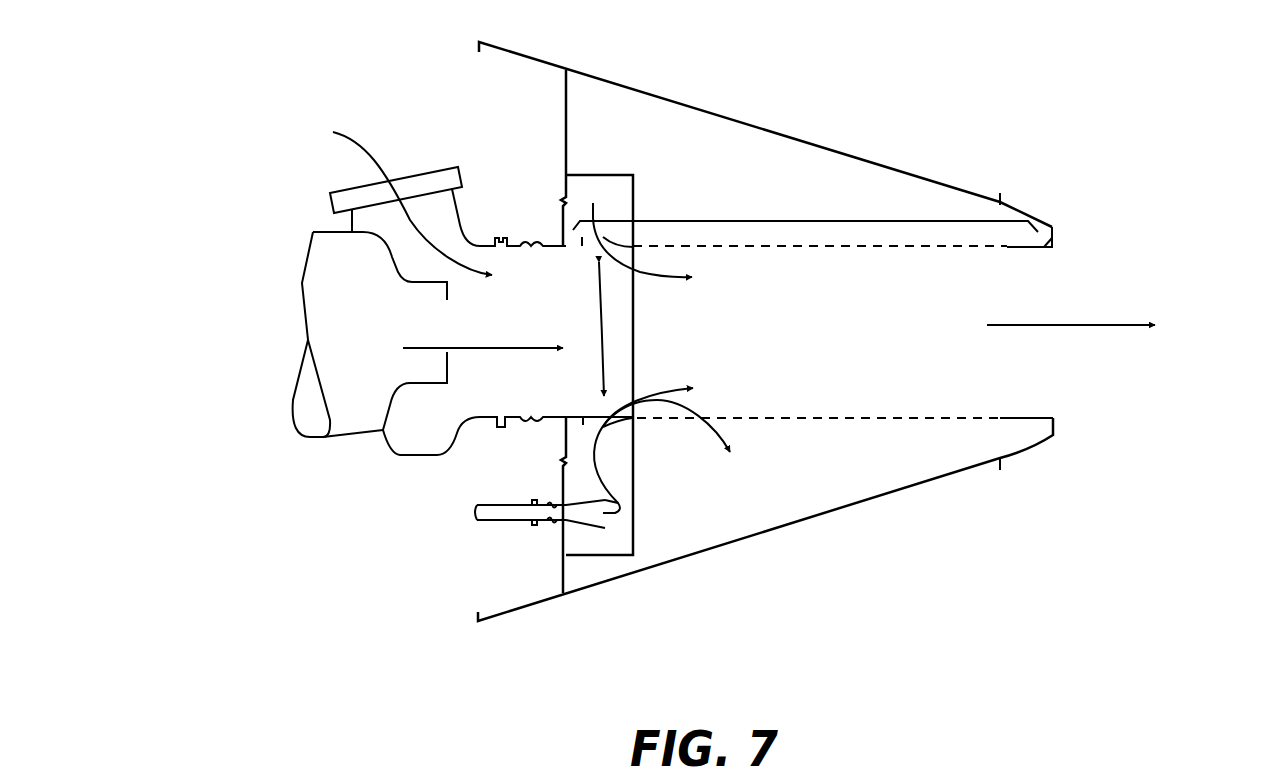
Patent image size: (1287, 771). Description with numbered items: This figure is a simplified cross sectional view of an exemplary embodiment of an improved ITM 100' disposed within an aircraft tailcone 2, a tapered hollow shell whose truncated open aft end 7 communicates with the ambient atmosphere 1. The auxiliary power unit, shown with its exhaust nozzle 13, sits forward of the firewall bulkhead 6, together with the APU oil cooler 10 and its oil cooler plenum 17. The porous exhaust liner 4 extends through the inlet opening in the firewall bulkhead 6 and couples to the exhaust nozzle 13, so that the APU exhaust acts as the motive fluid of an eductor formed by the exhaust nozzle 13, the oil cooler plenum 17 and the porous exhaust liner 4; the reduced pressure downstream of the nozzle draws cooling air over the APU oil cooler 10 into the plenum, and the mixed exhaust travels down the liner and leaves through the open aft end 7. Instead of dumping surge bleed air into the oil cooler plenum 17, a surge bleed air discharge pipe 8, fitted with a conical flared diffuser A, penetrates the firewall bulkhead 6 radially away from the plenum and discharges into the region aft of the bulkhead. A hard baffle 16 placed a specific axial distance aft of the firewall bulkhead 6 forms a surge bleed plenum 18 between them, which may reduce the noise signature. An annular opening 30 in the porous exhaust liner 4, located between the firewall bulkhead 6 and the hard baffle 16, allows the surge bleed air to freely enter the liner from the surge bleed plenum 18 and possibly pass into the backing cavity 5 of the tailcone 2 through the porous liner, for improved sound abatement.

The improved ITM 100' is at (763, 325).
The ambient atmosphere 1 is at (1262, 301).
The tailcone 2 is at (773, 132).
The porous exhaust liner 4 is at (748, 221).
The backing cavity 5 is at (706, 176).
The firewall bulkhead 6 is at (568, 113).
The open aft end 7 is at (1053, 238).
The surge bleed air discharge pipe 8 is at (478, 521).
The APU oil cooler 10 is at (330, 203).
The exhaust nozzle 13 is at (370, 322).
The hard baffle 16 is at (612, 175).
The oil cooler plenum 17 is at (430, 275).
The surge bleed plenum 18 is at (585, 185).
The annular opening 30 is at (580, 329).
The diffuser A is at (587, 500).